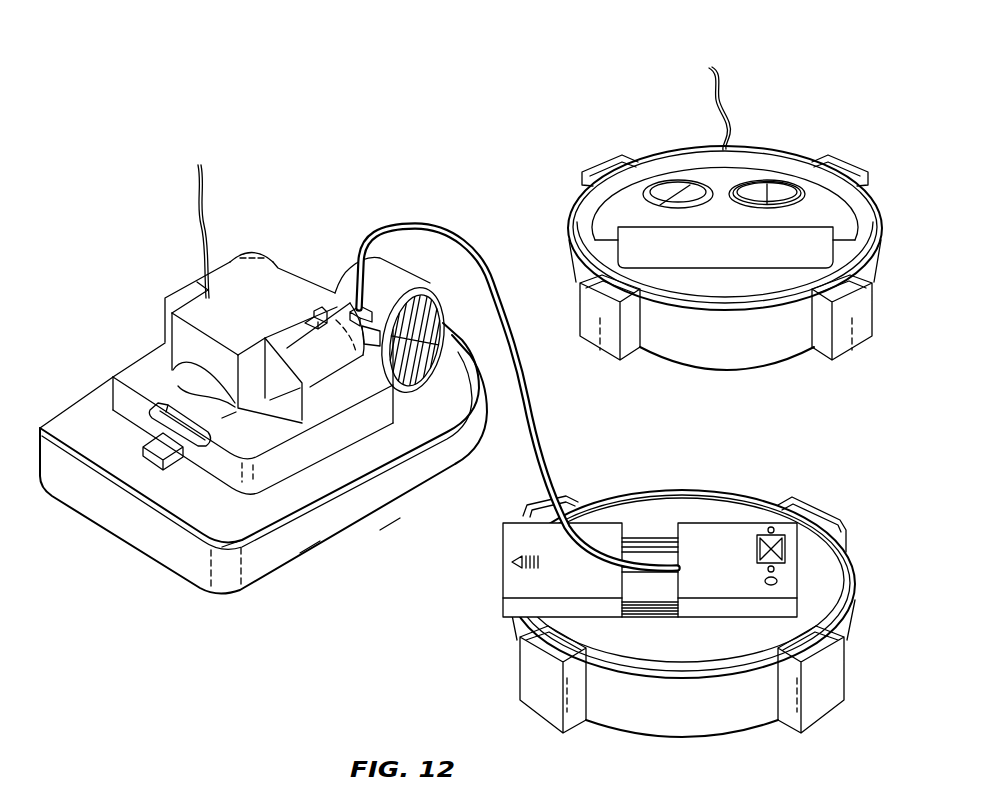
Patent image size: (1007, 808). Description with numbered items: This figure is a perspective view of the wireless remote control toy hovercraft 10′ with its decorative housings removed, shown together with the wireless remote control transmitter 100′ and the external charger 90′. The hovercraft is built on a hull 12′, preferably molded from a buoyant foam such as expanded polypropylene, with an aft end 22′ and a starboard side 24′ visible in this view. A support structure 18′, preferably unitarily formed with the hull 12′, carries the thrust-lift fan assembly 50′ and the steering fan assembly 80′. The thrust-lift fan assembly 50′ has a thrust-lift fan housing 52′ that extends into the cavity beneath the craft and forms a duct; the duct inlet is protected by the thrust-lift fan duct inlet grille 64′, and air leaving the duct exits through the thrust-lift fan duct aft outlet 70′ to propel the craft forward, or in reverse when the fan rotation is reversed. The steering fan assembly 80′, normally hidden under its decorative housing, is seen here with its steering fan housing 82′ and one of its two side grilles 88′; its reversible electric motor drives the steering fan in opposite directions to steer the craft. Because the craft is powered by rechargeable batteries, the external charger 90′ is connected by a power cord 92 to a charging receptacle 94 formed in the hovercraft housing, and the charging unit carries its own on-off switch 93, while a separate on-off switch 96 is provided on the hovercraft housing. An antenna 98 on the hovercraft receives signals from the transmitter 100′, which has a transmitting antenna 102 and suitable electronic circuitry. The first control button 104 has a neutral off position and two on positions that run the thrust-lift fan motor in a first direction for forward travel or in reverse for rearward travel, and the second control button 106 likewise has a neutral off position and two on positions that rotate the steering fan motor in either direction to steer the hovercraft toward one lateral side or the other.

The wireless remote control toy hovercraft 10′ is at (112, 190).
The hull 12′ is at (313, 530).
The support structure 18′ is at (236, 521).
The aft end 22′ is at (121, 543).
The starboard side 24′ is at (391, 518).
The thrust-lift fan assembly 50′ is at (207, 295).
The thrust-lift fan housing 52′ is at (190, 382).
The thrust-lift fan duct inlet grille 64′ is at (290, 264).
The thrust-lift fan duct aft outlet 70′ is at (156, 418).
The steering fan assembly 80′ is at (413, 393).
The steering fan housing 82′ is at (343, 268).
The side grille 88′ is at (443, 322).
The external charger 90′ is at (767, 457).
The power cord 92 is at (530, 432).
The on-off switch 93 is at (784, 544).
The charging receptacle 94 is at (371, 353).
The on-off switch 96 is at (313, 318).
The antenna 98 is at (205, 189).
The transmitter 100′ is at (771, 49).
The transmitting antenna 102 is at (724, 122).
The first control button 104 is at (688, 190).
The second control button 106 is at (778, 190).